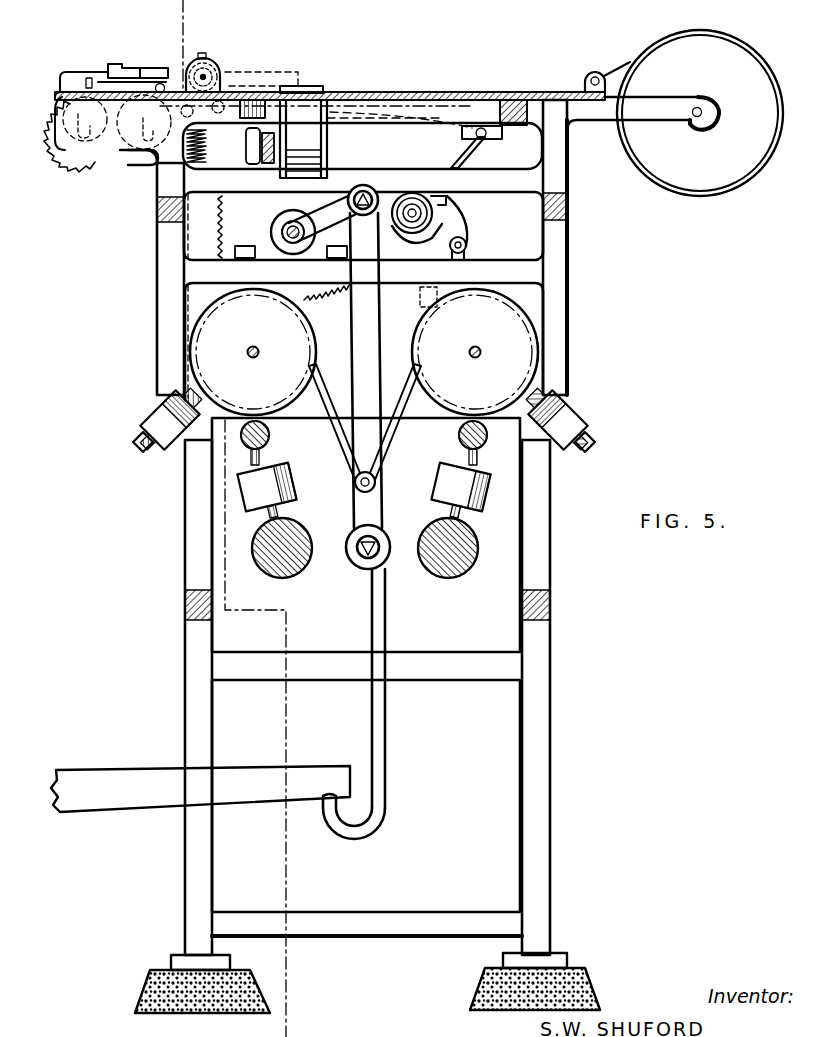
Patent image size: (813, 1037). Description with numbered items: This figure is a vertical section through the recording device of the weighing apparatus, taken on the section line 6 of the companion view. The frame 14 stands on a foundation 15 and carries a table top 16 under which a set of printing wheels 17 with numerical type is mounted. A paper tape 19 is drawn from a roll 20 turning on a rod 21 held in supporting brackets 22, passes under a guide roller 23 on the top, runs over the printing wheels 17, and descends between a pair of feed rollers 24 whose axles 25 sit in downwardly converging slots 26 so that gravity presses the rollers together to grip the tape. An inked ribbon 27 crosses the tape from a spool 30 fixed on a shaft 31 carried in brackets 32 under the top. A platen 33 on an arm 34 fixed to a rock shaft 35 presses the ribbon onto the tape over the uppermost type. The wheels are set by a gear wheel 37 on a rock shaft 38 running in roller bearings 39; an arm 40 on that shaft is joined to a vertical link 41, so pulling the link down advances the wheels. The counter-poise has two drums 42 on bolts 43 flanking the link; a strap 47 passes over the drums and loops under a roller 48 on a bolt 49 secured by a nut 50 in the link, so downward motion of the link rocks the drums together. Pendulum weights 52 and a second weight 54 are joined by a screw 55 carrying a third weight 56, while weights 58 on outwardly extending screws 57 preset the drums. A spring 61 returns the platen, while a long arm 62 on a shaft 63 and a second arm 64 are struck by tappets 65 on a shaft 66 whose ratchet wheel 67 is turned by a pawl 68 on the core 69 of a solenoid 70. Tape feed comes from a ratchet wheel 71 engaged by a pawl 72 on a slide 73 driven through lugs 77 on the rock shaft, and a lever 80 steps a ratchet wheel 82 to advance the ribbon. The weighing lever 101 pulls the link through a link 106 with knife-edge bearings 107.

The section line 6 is at (190, 46).
The frame 14 is at (186, 641).
The foundation 15 is at (150, 973).
The table top 16 is at (512, 100).
The printing or recording wheels 17 is at (250, 158).
The tape 19 is at (455, 92).
The roll 20 is at (652, 166).
The rod 21 is at (696, 105).
The supporting brackets 22 is at (648, 120).
The guide roller 23 is at (590, 74).
The feed rollers 24 is at (140, 163).
The axles 25 is at (80, 127).
The downwardly converging slots 26 is at (88, 140).
The inked ribbon 27 is at (312, 87).
The ribbon spool 30 is at (335, 118).
The shaft 31 is at (351, 139).
The brackets 32 is at (340, 150).
The platen 33 is at (113, 66).
The arm 34 is at (148, 68).
The rock shaft 35 is at (212, 73).
The gear wheel 37 is at (220, 236).
The rock shaft 38 is at (287, 238).
The roller bearings 39 is at (268, 226).
The arm 40 is at (313, 232).
The vertical link 41 is at (352, 336).
The drums 42 is at (364, 352).
The bolts 43 is at (258, 358).
The strap 47 is at (334, 441).
The roller 48 is at (352, 495).
The bolt or axle 49 is at (384, 488).
The nut 50 is at (380, 478).
The weight 52 is at (292, 572).
The second weight 54 is at (458, 435).
The screw 55 is at (470, 460).
The third weight 56 is at (478, 508).
The screws 57 is at (594, 444).
The weights 58 is at (150, 415).
The spring 61 is at (183, 165).
The long arm 62 is at (398, 100).
The shaft 63 is at (490, 132).
The second arm 64 is at (490, 150).
The tappets 65 is at (455, 233).
The shaft 66 is at (412, 210).
The ratchet wheel 67 is at (445, 216).
The pawl 68 is at (466, 247).
The core 69 is at (457, 254).
The solenoid 70 is at (425, 300).
The ratchet wheel 71 is at (55, 118).
The pawl 72 is at (103, 92).
The reciprocatory slide 73 is at (143, 74).
The lugs 77 is at (205, 57).
The lever 80 is at (262, 100).
The ratchet wheel 82 is at (250, 142).
The lever 101 is at (95, 786).
The link 106 is at (386, 713).
The knife-edge bearings 107 is at (325, 800).